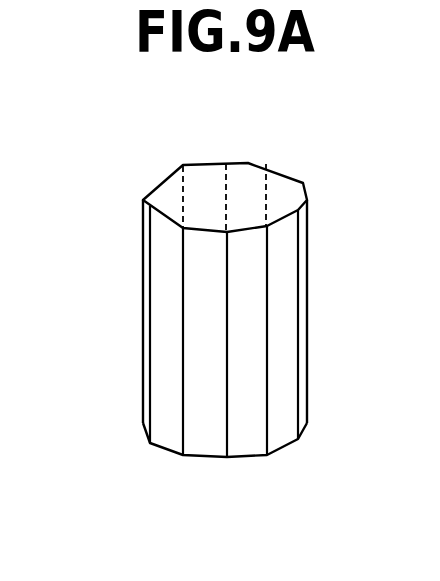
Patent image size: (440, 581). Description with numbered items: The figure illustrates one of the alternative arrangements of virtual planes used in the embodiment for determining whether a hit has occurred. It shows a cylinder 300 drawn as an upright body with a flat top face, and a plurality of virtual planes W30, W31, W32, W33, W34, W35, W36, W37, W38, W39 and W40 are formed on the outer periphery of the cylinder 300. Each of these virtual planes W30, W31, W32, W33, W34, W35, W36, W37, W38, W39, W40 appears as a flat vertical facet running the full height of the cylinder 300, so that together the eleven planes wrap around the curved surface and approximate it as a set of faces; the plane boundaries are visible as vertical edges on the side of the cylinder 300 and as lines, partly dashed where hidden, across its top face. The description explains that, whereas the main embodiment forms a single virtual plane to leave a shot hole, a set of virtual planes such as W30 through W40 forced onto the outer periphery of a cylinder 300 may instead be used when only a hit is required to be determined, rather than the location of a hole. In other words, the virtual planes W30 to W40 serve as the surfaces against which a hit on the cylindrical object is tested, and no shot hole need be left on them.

The cylinder 300 is at (168, 188).
The virtual plane W30 is at (282, 439).
The virtual plane W31 is at (309, 426).
The virtual plane W32 is at (303, 193).
The virtual plane W33 is at (288, 175).
The virtual plane W34 is at (247, 163).
The virtual plane W35 is at (205, 163).
The virtual plane W36 is at (163, 183).
The virtual plane W37 is at (143, 235).
The virtual plane W38 is at (165, 267).
The virtual plane W39 is at (200, 447).
The virtual plane W40 is at (245, 448).